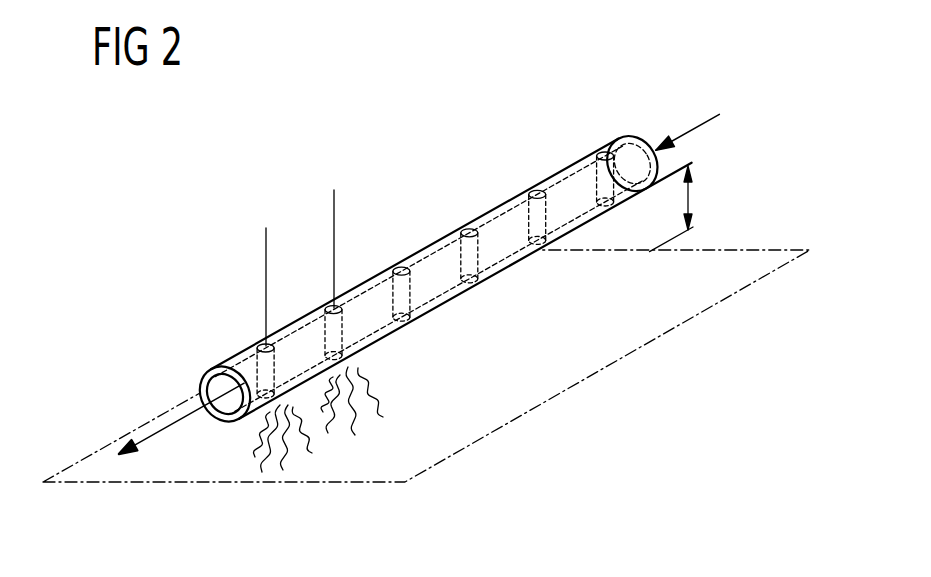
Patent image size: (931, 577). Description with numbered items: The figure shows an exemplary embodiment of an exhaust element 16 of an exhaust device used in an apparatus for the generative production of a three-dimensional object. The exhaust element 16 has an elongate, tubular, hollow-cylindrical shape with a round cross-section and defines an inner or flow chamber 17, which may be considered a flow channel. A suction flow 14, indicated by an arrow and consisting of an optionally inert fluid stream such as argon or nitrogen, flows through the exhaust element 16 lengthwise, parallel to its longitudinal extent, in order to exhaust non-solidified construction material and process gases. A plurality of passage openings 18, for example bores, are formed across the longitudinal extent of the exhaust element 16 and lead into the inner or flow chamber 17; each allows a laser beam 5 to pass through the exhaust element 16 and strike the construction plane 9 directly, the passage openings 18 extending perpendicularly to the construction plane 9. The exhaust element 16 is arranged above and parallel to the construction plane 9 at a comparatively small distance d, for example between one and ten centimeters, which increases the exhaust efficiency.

The laser beam 5 is at (266, 272).
The construction plane 9 is at (628, 330).
The suction flow 14 is at (697, 122).
The exhaust element 16 is at (505, 222).
The inner or flow chamber 17 is at (217, 379).
The passage openings 18 is at (332, 303).
The distance d is at (690, 198).